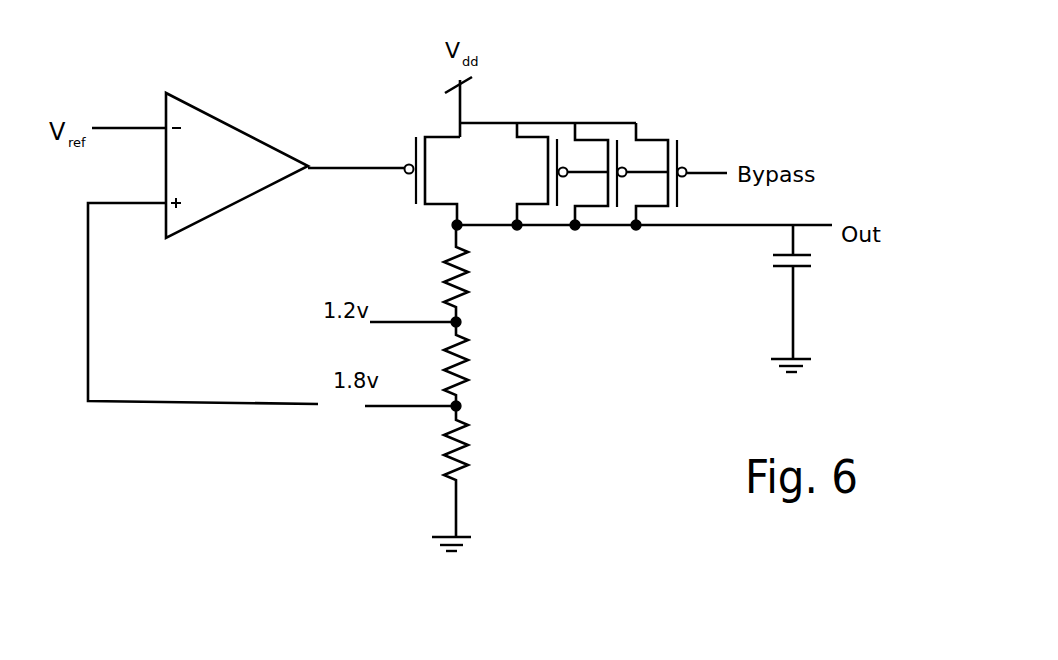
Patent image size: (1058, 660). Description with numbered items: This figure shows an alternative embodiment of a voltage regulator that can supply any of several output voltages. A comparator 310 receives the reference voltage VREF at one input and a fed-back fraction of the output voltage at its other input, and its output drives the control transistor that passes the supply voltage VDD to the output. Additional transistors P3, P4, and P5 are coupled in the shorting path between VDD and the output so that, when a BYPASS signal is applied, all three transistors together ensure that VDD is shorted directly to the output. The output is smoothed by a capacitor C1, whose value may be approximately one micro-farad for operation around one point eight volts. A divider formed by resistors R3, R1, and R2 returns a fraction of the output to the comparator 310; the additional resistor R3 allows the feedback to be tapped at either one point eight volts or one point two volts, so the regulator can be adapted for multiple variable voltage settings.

The comparator 310 is at (183, 137).
The transistor P3 is at (522, 128).
The transistor P4 is at (585, 135).
The transistor P5 is at (657, 138).
The resistor R3 is at (472, 273).
The resistor R1 is at (472, 376).
The resistor R2 is at (472, 468).
The smoothing capacitor C1 is at (822, 266).